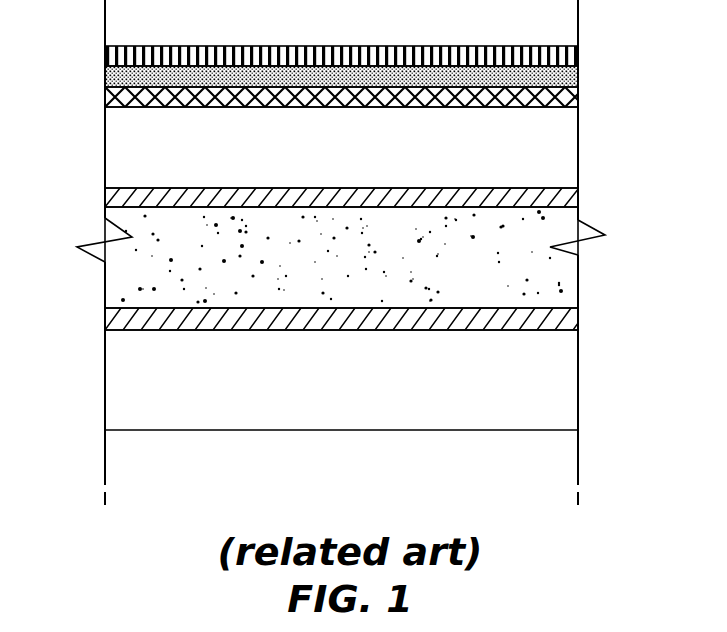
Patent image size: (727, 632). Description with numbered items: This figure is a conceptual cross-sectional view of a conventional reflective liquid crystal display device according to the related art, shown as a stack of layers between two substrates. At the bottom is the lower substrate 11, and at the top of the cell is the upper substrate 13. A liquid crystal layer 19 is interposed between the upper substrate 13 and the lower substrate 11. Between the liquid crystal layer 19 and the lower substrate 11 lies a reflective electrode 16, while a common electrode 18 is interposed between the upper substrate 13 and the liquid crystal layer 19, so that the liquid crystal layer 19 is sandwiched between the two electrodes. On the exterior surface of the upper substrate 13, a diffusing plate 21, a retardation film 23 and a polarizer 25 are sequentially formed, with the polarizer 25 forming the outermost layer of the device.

The lower substrate 11 is at (570, 390).
The upper substrate 13 is at (568, 138).
The reflective electrode 16 is at (570, 318).
The common electrode 18 is at (575, 200).
The liquid crystal layer 19 is at (570, 280).
The diffusing plate 21 is at (105, 91).
The retardation film 23 is at (575, 77).
The polarizer 25 is at (572, 50).